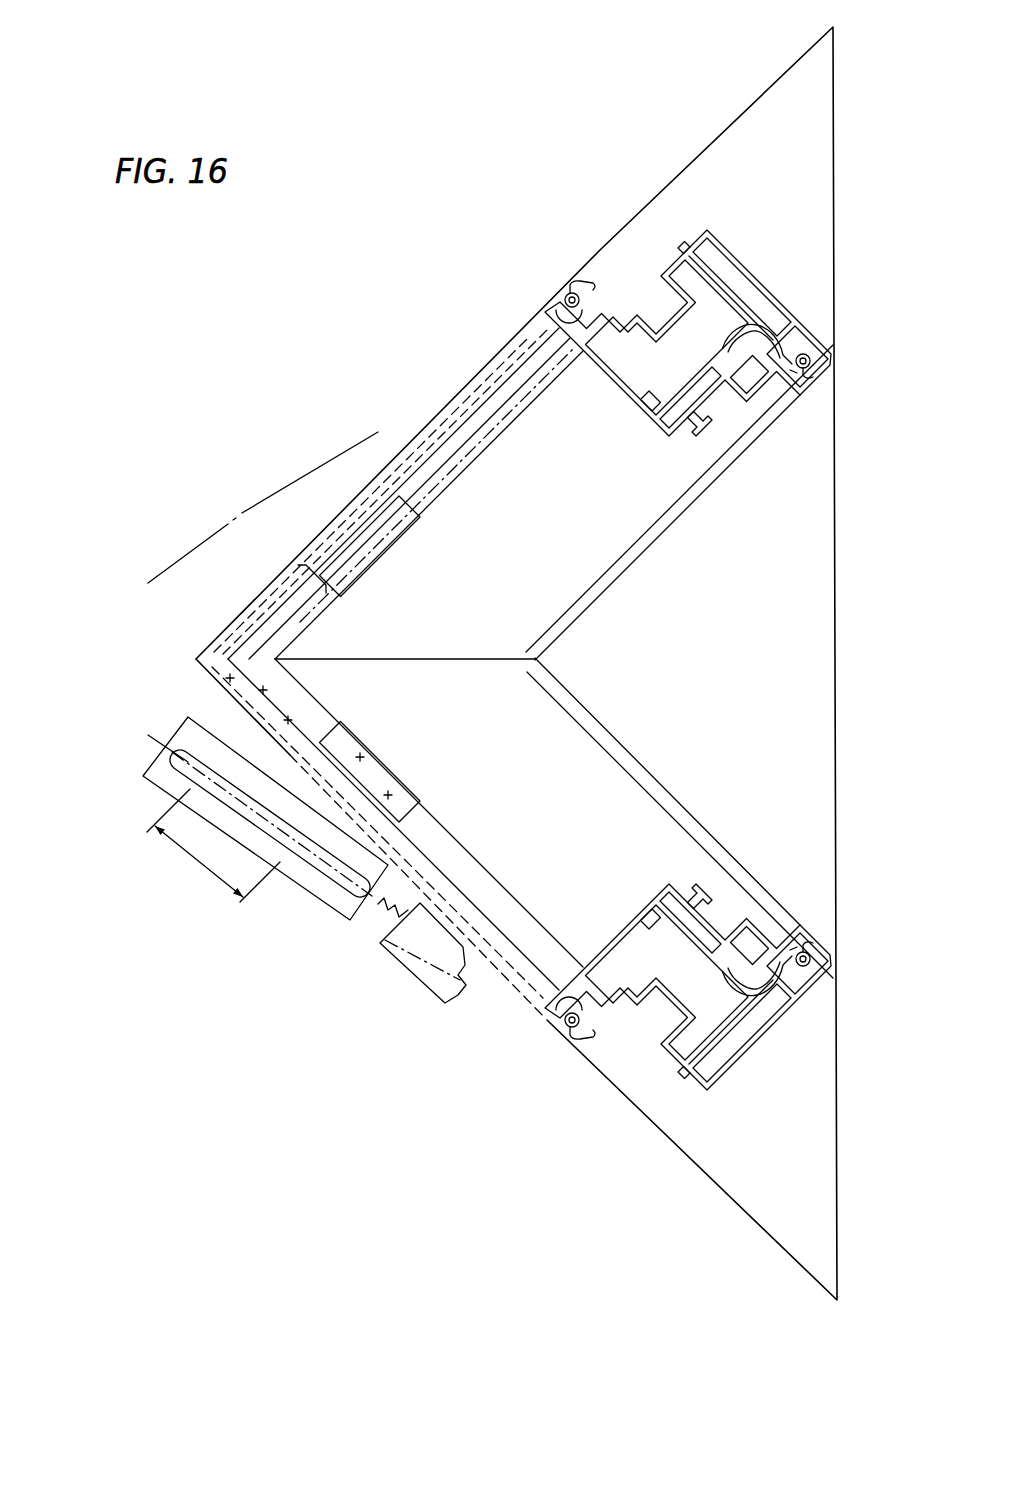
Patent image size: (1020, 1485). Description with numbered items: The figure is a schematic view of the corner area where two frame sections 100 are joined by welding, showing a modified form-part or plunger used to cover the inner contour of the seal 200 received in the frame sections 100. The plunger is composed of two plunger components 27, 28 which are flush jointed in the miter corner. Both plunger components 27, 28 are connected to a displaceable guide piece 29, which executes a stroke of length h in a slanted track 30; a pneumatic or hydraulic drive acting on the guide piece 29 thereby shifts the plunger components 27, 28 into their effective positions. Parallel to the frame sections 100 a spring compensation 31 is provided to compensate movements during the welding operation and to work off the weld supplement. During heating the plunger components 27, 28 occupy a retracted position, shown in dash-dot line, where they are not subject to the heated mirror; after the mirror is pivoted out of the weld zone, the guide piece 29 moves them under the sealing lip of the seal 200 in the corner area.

The frame section 100 is at (617, 190).
The seal 200 is at (578, 266).
The plunger component 27 is at (243, 627).
The plunger component 28 is at (212, 685).
The guide piece 29 is at (200, 789).
The slanted track 30 is at (340, 887).
The spring compensation 31 is at (377, 903).